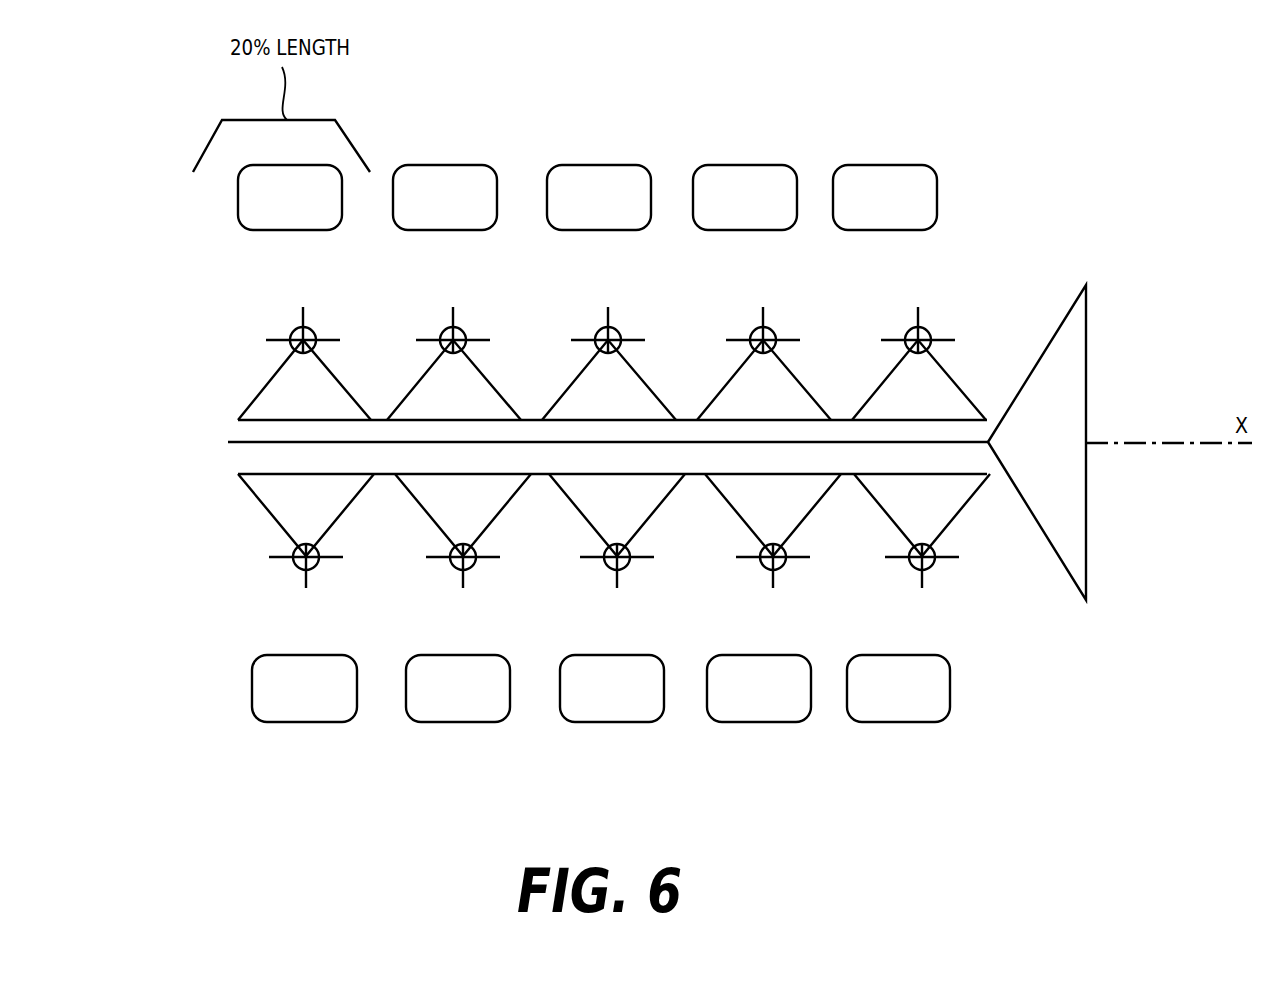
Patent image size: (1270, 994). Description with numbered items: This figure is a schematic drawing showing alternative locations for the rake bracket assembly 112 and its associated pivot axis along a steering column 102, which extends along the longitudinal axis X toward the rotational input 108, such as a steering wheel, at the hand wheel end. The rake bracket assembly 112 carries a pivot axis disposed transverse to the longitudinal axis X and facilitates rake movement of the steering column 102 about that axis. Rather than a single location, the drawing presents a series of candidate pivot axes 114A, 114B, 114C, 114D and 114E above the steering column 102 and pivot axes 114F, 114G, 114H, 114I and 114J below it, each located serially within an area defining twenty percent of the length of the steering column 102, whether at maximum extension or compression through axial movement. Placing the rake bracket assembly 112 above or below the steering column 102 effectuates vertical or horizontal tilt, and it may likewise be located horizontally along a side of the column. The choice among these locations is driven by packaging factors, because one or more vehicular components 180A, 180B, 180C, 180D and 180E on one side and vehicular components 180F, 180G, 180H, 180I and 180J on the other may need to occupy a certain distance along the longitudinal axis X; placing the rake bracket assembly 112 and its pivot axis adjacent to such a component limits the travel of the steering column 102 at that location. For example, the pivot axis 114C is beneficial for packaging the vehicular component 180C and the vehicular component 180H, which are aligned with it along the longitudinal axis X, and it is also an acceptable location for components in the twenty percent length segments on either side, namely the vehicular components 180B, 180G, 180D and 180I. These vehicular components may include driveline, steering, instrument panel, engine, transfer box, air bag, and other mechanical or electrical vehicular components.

The steering column 102 is at (221, 452).
The rotational input 108 is at (1086, 316).
The rake bracket assembly 112 is at (262, 392).
The pivot axis 114A is at (296, 330).
The pivot axis 114B is at (446, 330).
The pivot axis 114C is at (601, 330).
The pivot axis 114D is at (757, 328).
The pivot axis 114E is at (912, 330).
The pivot axis 114F is at (296, 566).
The pivot axis 114G is at (453, 566).
The pivot axis 114H is at (607, 566).
The pivot axis 114I is at (763, 566).
The pivot axis 114J is at (912, 566).
The vehicular component 180A is at (312, 210).
The vehicular component 180B is at (467, 210).
The vehicular component 180C is at (621, 210).
The vehicular component 180D is at (767, 210).
The vehicular component 180E is at (907, 210).
The vehicular component 180F is at (325, 700).
The vehicular component 180G is at (480, 700).
The vehicular component 180H is at (634, 700).
The vehicular component 180I is at (777, 700).
The vehicular component 180J is at (920, 700).